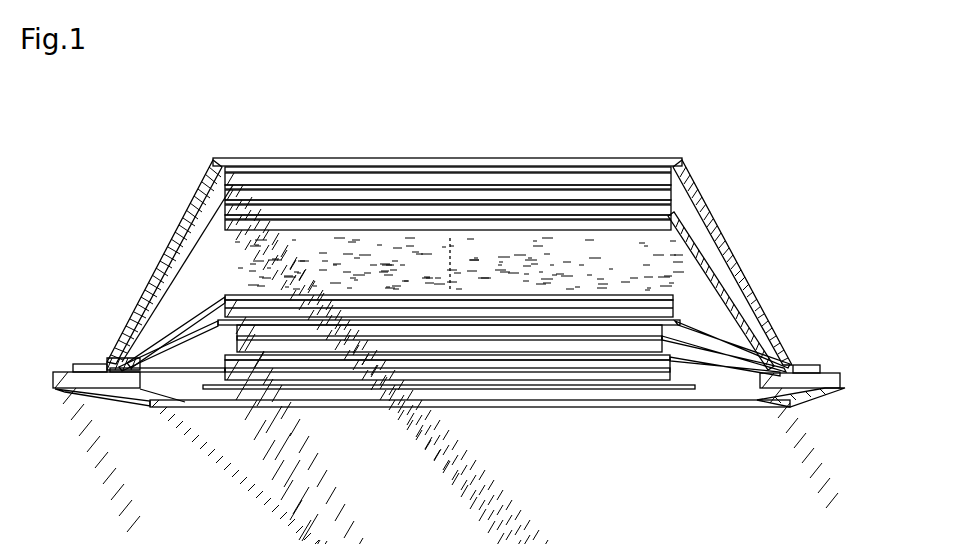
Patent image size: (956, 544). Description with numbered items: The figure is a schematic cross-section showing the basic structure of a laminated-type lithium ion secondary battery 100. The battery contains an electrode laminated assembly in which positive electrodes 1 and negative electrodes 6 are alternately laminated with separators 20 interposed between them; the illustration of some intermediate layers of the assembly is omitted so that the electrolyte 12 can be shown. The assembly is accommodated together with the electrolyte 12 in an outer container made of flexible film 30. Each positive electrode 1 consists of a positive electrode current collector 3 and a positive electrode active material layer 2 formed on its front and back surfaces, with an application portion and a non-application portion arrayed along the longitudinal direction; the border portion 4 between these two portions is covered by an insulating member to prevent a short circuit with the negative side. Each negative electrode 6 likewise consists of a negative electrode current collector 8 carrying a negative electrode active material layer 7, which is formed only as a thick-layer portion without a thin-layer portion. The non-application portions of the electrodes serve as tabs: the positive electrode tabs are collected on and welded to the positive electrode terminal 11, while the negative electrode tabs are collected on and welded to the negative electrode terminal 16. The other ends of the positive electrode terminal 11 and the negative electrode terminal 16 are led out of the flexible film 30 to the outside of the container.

The lithium ion secondary battery 100 is at (548, 111).
The positive electrode 1 is at (232, 214).
The positive electrode active material layer 2 is at (588, 206).
The negative electrode active material layer 7 is at (318, 185).
The electrolyte 12 is at (620, 238).
The negative electrode 6 is at (762, 344).
The border portion 4 is at (700, 346).
The positive electrode current collector 3 is at (740, 338).
The negative electrode current collector 8 is at (158, 345).
The negative electrode terminal 16 is at (68, 389).
The positive electrode terminal 11 is at (830, 389).
The separator 20 is at (207, 390).
The flexible film 30 is at (345, 408).